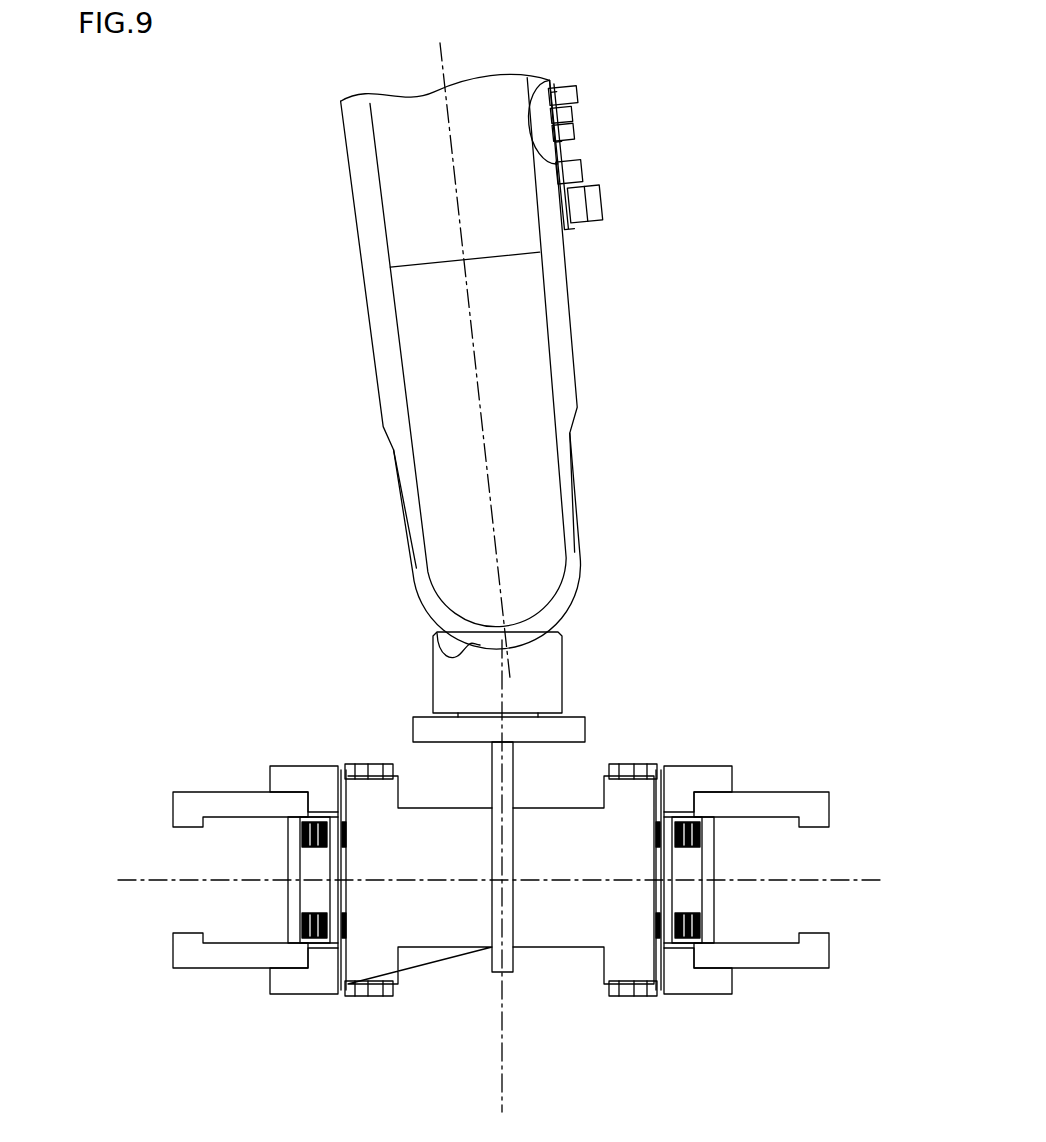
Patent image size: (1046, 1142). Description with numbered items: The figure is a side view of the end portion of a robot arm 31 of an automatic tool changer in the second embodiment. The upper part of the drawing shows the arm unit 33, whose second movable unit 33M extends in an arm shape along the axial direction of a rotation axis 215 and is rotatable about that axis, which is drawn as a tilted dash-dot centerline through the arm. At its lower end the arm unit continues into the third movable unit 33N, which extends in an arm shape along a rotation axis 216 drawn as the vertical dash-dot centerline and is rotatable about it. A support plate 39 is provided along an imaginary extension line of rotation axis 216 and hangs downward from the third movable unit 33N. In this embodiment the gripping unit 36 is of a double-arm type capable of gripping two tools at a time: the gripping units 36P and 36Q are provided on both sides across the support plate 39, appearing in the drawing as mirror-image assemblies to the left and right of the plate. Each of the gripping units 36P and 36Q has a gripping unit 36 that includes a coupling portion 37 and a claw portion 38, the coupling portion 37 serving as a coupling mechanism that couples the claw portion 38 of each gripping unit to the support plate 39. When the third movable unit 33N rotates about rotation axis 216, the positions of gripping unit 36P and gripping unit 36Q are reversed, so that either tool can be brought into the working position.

The robot arm 31 is at (501, 572).
The arm unit 33 is at (501, 577).
The second movable unit 33M is at (557, 277).
The third movable unit 33N is at (543, 662).
The rotation axis 215 is at (470, 323).
The rotation axis 216 is at (498, 680).
The gripping unit 36 is at (500, 842).
The gripping unit 36P is at (310, 750).
The gripping unit 36Q is at (687, 745).
The coupling portion 37 is at (438, 923).
The claw portion 38 is at (227, 962).
The support plate 39 is at (513, 955).